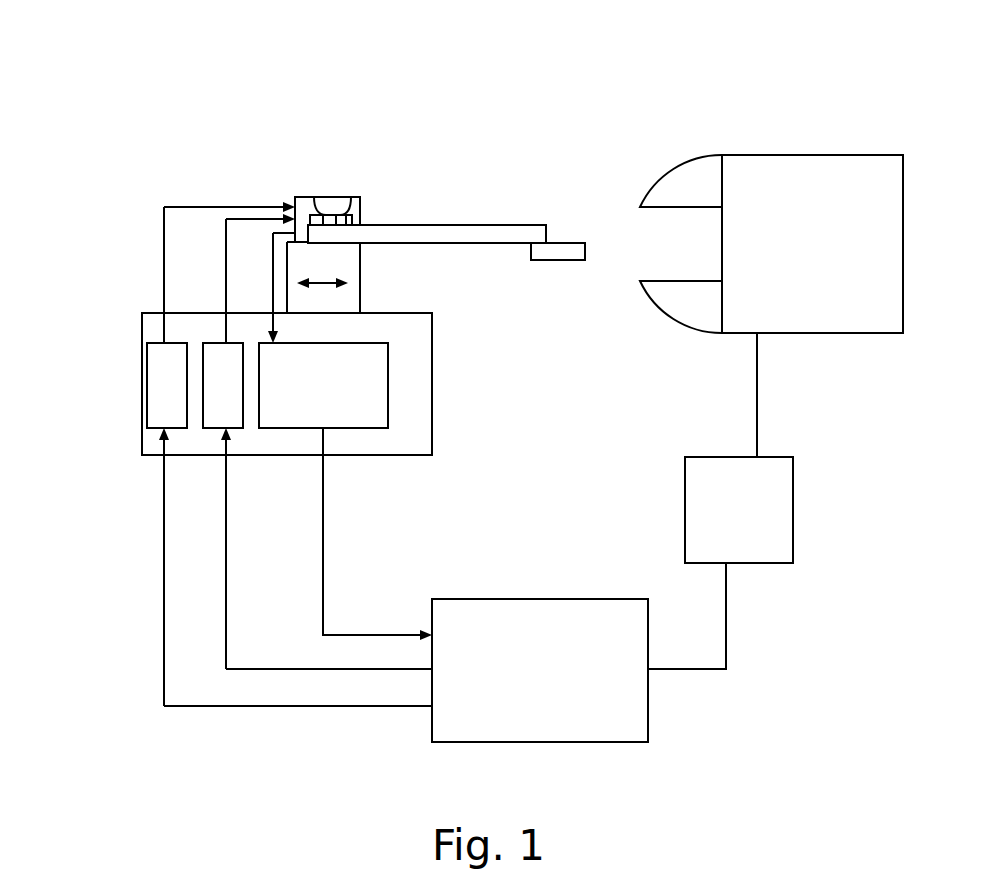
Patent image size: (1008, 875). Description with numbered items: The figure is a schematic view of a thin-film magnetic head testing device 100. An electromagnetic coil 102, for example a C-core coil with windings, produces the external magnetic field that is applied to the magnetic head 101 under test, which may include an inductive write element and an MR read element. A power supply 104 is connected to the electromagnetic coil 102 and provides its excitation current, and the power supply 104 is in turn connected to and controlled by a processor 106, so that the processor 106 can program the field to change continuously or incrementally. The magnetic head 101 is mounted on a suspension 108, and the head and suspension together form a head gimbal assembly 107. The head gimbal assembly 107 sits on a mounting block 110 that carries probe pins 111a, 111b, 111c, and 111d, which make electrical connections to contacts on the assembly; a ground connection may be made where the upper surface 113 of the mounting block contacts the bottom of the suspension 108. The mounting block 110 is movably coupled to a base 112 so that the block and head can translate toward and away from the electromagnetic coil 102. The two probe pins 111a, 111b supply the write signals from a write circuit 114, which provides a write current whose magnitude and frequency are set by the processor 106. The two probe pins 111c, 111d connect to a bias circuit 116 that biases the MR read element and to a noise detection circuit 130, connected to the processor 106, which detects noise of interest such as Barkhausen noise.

The thin-film magnetic head testing device 100 is at (262, 57).
The magnetic head 101 is at (546, 261).
The electromagnetic coil 102 is at (771, 244).
The power supply 104 is at (739, 510).
The processor 106 is at (540, 670).
The head gimbal assembly 107 is at (527, 163).
The suspension 108 is at (470, 225).
The mounting block 110 is at (332, 196).
The probe pin 111a is at (318, 222).
The probe pin 111b is at (326, 222).
The probe pin 111c is at (350, 196).
The probe pin 111d is at (354, 219).
The base 112 is at (293, 414).
The upper surface 113 is at (338, 243).
The write circuit 114 is at (147, 397).
The bias circuit 116 is at (238, 430).
The noise detection circuit 130 is at (343, 430).